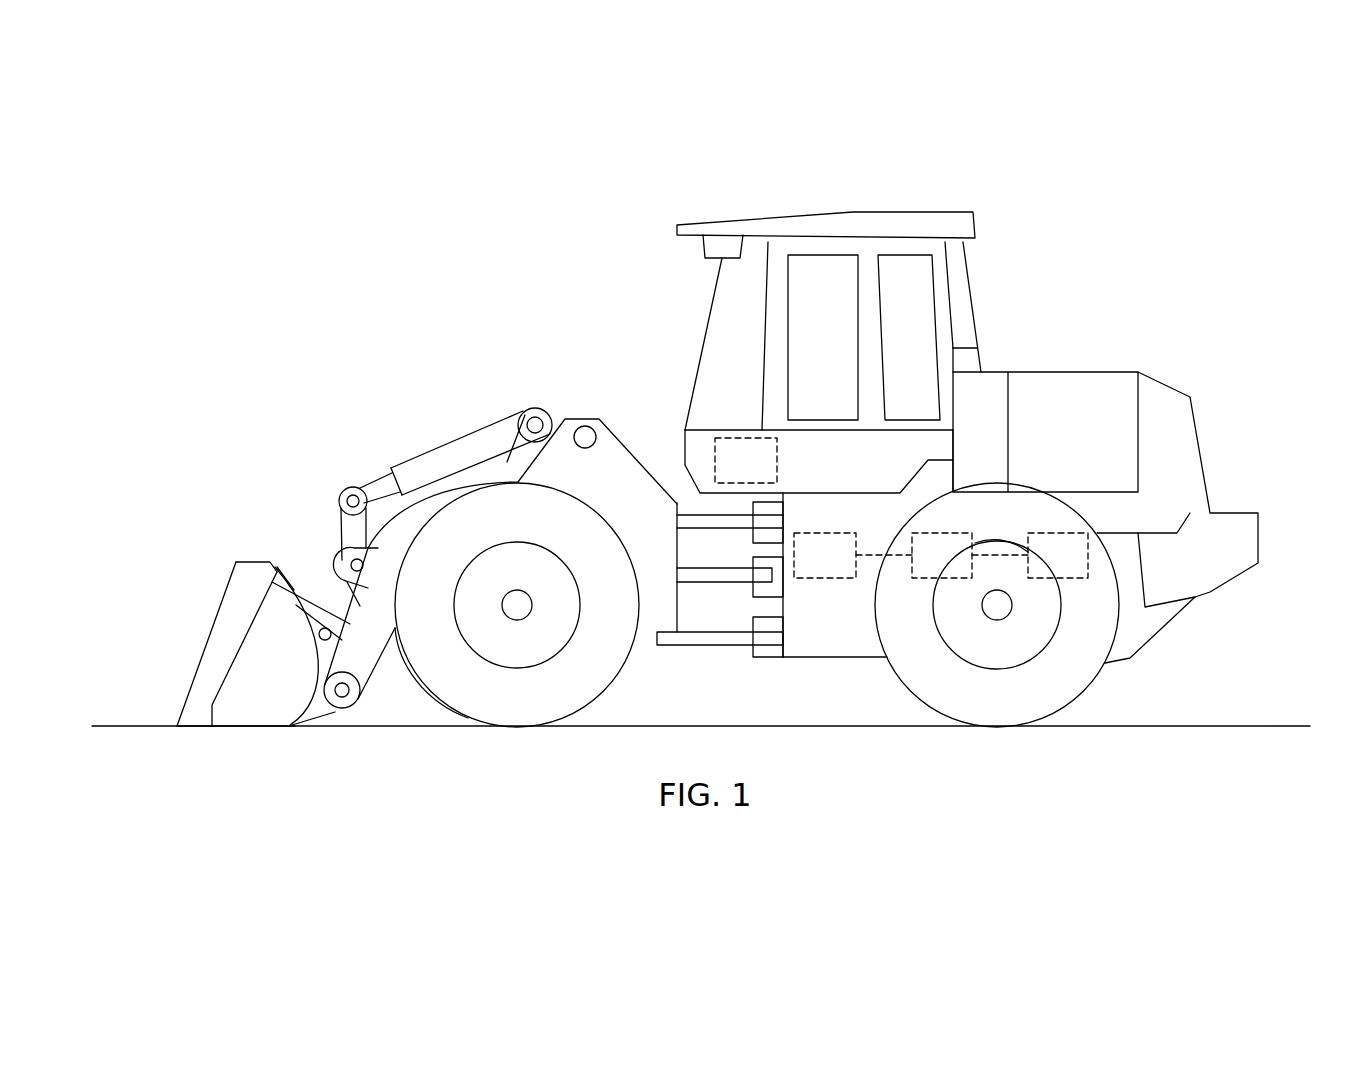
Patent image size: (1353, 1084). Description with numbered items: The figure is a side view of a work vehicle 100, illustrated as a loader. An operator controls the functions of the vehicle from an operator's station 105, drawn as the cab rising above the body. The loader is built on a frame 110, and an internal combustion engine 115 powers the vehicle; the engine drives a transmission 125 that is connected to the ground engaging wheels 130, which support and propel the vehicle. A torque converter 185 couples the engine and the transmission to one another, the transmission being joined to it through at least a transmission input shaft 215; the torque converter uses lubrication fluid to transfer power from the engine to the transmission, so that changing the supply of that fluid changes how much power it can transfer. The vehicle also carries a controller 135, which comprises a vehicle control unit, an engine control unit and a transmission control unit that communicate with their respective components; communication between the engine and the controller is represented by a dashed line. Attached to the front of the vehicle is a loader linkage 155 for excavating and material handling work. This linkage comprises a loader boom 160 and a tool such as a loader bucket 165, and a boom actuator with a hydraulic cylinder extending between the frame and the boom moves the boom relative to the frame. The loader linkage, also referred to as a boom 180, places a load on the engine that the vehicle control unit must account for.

The work vehicle 100 is at (622, 182).
The operator's station 105 is at (805, 352).
The frame 110 is at (650, 618).
The internal combustion engine 115 is at (806, 569).
The transmission 125 is at (1039, 569).
The ground engaging wheels 130 is at (563, 683).
The controller 135 is at (727, 474).
The loader linkage 155 is at (271, 500).
The loader boom 160 is at (367, 657).
The loader bucket 165 is at (288, 684).
The boom 180 is at (266, 546).
The torque converter 185 is at (923, 569).
The transmission input shaft 215 is at (994, 553).